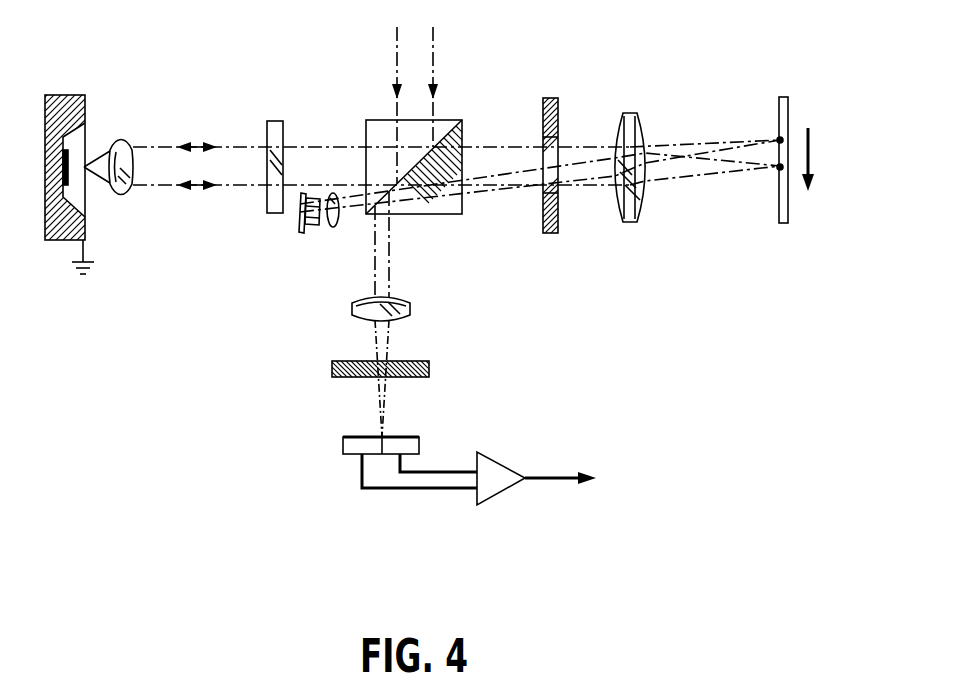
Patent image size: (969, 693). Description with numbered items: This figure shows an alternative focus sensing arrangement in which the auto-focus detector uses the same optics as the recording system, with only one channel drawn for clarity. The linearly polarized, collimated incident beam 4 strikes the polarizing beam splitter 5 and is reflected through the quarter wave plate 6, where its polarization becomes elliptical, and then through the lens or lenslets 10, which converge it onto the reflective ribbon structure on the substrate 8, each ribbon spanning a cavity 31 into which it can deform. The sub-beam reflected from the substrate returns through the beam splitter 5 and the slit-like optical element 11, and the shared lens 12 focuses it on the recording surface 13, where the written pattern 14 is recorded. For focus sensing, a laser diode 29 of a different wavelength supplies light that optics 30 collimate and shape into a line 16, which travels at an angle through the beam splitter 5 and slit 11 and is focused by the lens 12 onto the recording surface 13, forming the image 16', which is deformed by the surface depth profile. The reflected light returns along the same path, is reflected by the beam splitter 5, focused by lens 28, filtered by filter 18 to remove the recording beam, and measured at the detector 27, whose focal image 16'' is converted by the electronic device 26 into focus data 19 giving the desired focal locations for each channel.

The incident beam 4 is at (433, 80).
The polarizing beam splitter 5 is at (463, 200).
The quarter wave plate 6 is at (273, 120).
The substrate 8 is at (67, 95).
The lenslets 10 is at (115, 137).
The optical element (slit) 11 is at (550, 98).
The lens 12 is at (628, 113).
The recording surface 13 is at (783, 97).
The written pattern 14 is at (777, 167).
The line 16 is at (540, 128).
The image of the line 16' is at (740, 90).
The focal point on detector 16'' is at (323, 379).
The filter 18 is at (332, 368).
The focus data 19 is at (547, 483).
The electronic device 26 is at (500, 455).
The detector 27 is at (400, 437).
The lens 28 is at (410, 307).
The laser diode 29 is at (320, 227).
The optics 30 is at (340, 223).
The cavity 31 is at (812, 148).